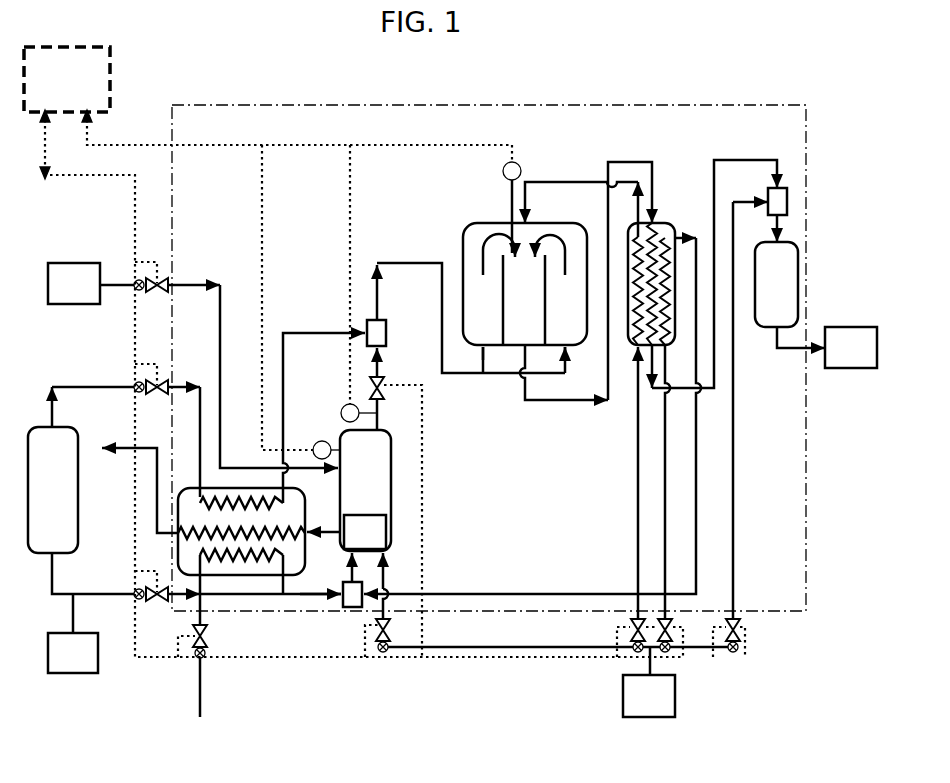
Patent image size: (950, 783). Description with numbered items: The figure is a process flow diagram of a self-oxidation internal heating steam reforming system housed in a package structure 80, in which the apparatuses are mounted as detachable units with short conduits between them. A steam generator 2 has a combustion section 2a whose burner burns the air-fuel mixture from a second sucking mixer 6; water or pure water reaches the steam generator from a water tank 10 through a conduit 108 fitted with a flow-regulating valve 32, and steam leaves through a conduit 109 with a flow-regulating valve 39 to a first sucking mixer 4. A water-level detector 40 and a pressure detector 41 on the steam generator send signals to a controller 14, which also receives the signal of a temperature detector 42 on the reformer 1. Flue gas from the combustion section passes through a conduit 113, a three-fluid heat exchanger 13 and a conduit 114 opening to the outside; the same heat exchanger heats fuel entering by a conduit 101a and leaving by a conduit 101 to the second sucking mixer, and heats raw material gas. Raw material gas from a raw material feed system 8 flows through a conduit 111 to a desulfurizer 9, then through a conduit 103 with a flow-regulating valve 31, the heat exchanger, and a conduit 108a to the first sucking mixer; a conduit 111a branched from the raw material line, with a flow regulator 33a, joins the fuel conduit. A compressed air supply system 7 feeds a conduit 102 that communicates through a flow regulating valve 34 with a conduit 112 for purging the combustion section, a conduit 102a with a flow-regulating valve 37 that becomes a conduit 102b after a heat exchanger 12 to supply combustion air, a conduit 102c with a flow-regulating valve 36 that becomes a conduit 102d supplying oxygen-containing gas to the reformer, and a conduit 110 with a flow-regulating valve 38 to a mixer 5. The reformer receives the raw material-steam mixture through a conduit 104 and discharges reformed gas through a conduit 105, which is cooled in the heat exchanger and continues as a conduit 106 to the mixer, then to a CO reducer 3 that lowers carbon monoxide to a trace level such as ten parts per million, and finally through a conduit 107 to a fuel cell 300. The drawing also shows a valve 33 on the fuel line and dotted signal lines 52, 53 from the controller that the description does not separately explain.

The reformer 1 is at (462, 246).
The steam generator 2 is at (391, 495).
The combustion section 2a is at (381, 530).
The CO reducer 3 is at (800, 283).
The first sucking mixer 4 is at (386, 328).
The mixer 5 is at (788, 200).
The second sucking mixer 6 is at (348, 608).
The compressed air supply system 7 is at (676, 700).
The raw material feed system 8 is at (73, 675).
The desulfurizer 9 is at (78, 525).
The water tank 10 is at (75, 263).
The heat exchanger 12 is at (662, 220).
The heat exchanger 13 is at (232, 488).
The controller 14 is at (110, 78).
The flow-regulating valve 31 is at (145, 398).
The flow-regulating valve 32 is at (150, 292).
The valve 33 is at (208, 638).
The flow regulator 33a is at (148, 602).
The flow regulating valve 34 is at (392, 630).
The flow-regulating valve 36 is at (630, 620).
The flow-regulating valve 37 is at (670, 620).
The flow-regulating valve 38 is at (742, 630).
The flow-regulating valve 39 is at (385, 382).
The water-level detector 40 is at (316, 443).
The pressure detector 41 is at (348, 403).
The temperature detector 42 is at (503, 172).
The signal line 52 is at (215, 145).
The control signal line 53 is at (45, 180).
The package structure 80 is at (560, 105).
The conduit 101 is at (305, 598).
The conduit 101a is at (202, 697).
The conduit 102 is at (525, 652).
The conduit 102a is at (665, 498).
The conduit 102b is at (585, 592).
The conduit 102c is at (638, 462).
The conduit 102d is at (557, 180).
The conduit 103 is at (50, 408).
The conduit 104 is at (500, 375).
The conduit 105 is at (557, 403).
The conduit 106 is at (732, 158).
The conduit 107 is at (792, 350).
The conduit 108 is at (222, 300).
The conduit 108a is at (283, 333).
The conduit 109 is at (422, 425).
The conduit 110 is at (733, 455).
The conduit 111 is at (50, 570).
The conduit 111a is at (177, 600).
The conduit 112 is at (388, 580).
The conduit 113 is at (318, 563).
The conduit 114 is at (125, 450).
The fuel cell 300 is at (852, 370).